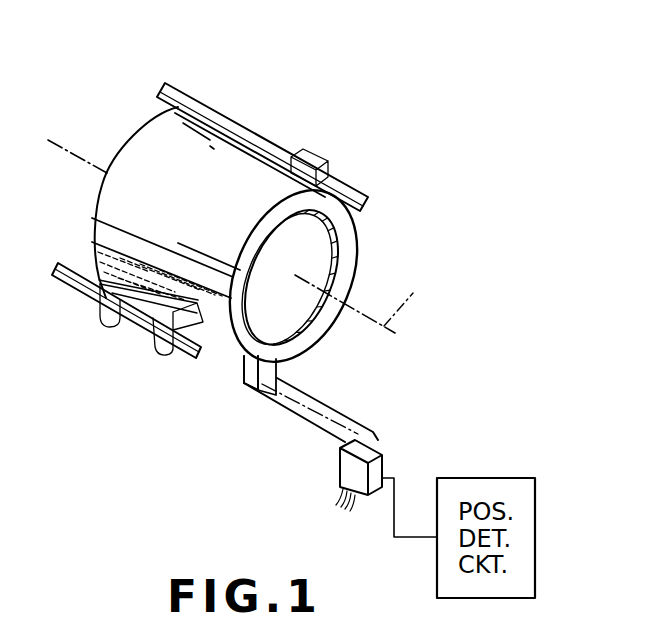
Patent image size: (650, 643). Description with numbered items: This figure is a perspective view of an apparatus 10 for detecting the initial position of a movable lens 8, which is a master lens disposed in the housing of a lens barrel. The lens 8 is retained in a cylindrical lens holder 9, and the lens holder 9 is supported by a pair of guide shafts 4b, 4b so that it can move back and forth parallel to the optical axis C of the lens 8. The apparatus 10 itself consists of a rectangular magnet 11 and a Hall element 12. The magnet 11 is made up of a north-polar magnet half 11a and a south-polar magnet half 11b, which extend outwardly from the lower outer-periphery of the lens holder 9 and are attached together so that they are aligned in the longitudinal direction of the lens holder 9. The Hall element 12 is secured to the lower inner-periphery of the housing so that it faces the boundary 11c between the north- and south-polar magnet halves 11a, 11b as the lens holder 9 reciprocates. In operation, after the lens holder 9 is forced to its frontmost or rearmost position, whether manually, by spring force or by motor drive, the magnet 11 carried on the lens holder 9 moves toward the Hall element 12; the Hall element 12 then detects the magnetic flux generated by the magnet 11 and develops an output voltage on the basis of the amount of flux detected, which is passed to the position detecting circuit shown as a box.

The guide shaft 4b is at (200, 114).
The lens holder 9 is at (230, 185).
The movable lens 8 is at (313, 250).
The optical axis C is at (243, 236).
The magnet 11 is at (373, 374).
The north-polar magnet half 11a is at (246, 373).
The south-polar magnet half 11b is at (266, 396).
The boundary 11c is at (247, 386).
The apparatus for detecting an initial position 10 is at (287, 428).
The Hall element 12 is at (380, 456).